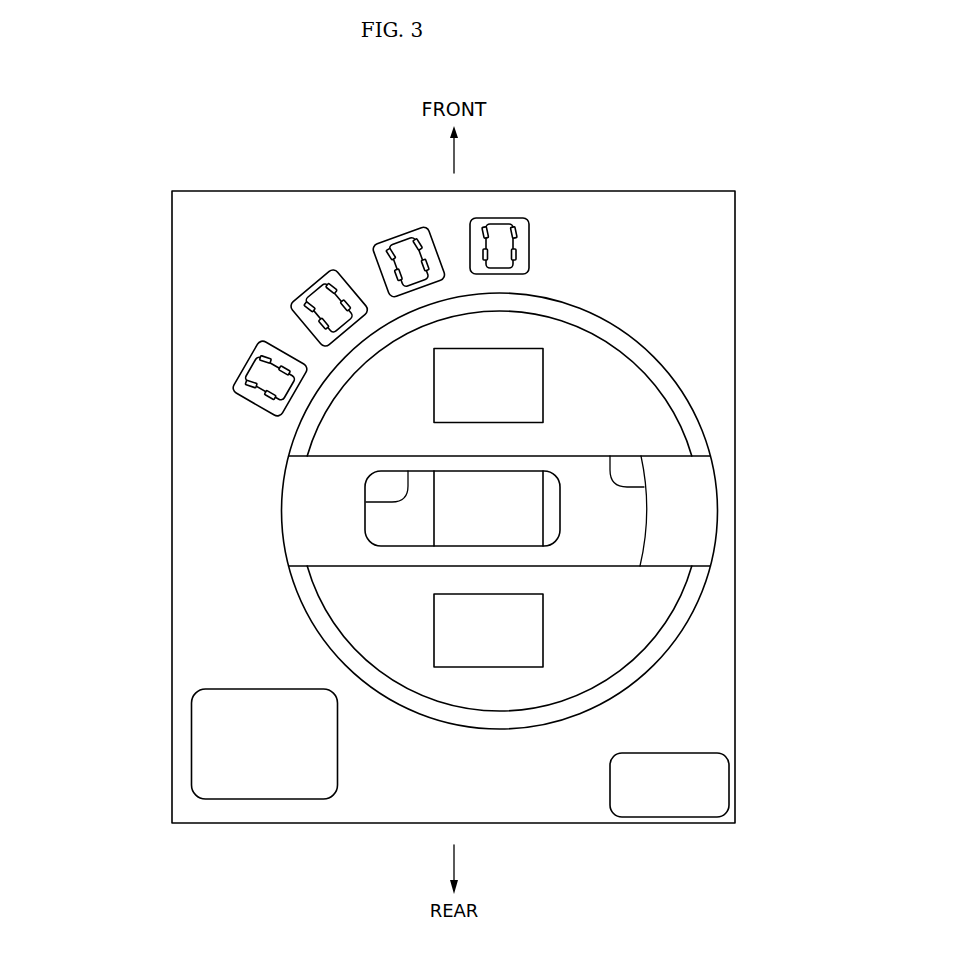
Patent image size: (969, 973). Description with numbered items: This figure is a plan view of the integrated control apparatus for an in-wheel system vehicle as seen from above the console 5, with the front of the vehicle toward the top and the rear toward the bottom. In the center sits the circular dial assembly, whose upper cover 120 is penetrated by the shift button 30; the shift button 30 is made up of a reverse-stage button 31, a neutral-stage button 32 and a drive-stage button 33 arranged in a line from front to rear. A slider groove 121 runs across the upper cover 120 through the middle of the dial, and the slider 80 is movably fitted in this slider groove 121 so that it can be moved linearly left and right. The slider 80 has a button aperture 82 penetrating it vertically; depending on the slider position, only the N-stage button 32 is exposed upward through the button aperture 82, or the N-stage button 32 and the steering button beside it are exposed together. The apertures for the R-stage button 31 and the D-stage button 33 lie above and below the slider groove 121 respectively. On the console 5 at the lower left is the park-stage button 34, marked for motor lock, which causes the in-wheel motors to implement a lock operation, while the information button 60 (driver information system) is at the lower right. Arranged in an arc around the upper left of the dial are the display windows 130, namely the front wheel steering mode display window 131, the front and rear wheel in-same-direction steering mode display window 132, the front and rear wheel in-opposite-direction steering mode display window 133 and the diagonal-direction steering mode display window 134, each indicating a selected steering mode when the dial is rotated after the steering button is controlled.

The console 5 is at (720, 273).
The shift button 30 is at (640, 501).
The R-stage button 31 is at (524, 400).
The N-stage button 32 is at (522, 513).
The D-stage button 33 is at (524, 629).
The P-stage button 34 is at (213, 735).
The information button 60 is at (720, 788).
The slider 80 is at (298, 527).
The button aperture 82 is at (395, 502).
The upper cover 120 is at (344, 597).
The slider groove 121 is at (652, 487).
The display windows 130 is at (295, 269).
The front wheel steering mode display window 131 is at (502, 242).
The front and rear wheel in-same-direction steering mode display window 132 is at (406, 256).
The front and rear wheel in-opposite-direction steering mode display window 133 is at (322, 300).
The diagonal-direction steering mode display window 134 is at (263, 377).